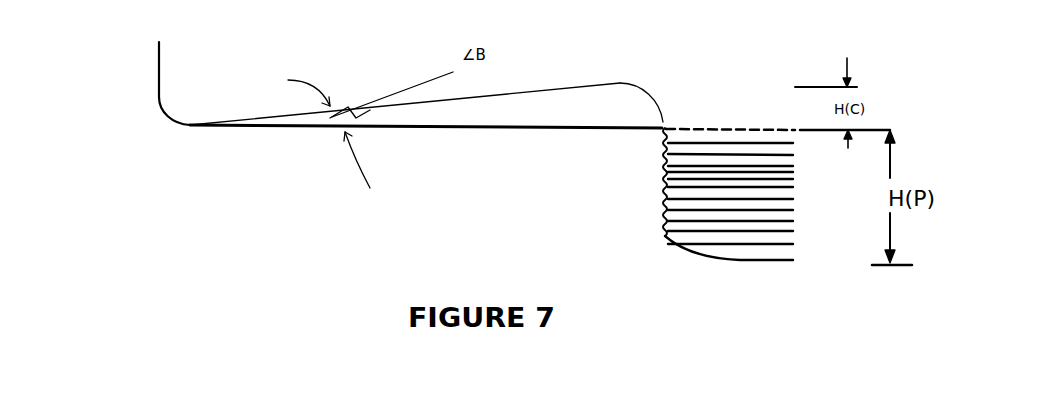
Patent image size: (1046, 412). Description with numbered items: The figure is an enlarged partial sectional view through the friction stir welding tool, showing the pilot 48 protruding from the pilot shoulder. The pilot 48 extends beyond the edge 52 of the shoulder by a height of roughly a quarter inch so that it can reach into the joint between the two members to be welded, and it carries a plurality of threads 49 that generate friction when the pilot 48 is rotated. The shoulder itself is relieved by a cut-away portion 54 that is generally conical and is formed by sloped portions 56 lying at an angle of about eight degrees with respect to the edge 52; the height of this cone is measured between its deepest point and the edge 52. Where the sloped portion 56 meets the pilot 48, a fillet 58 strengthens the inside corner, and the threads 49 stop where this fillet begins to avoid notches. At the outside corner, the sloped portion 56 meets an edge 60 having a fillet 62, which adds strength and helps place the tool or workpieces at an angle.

The pilot 48 is at (660, 200).
The threads 49 is at (762, 243).
The edge of pilot shoulder 52 is at (272, 128).
The cut-away portion 54 is at (507, 108).
The sloped portion 56 is at (532, 92).
The fillet 58 is at (653, 90).
The edge 60 is at (155, 55).
The fillet 62 is at (168, 115).